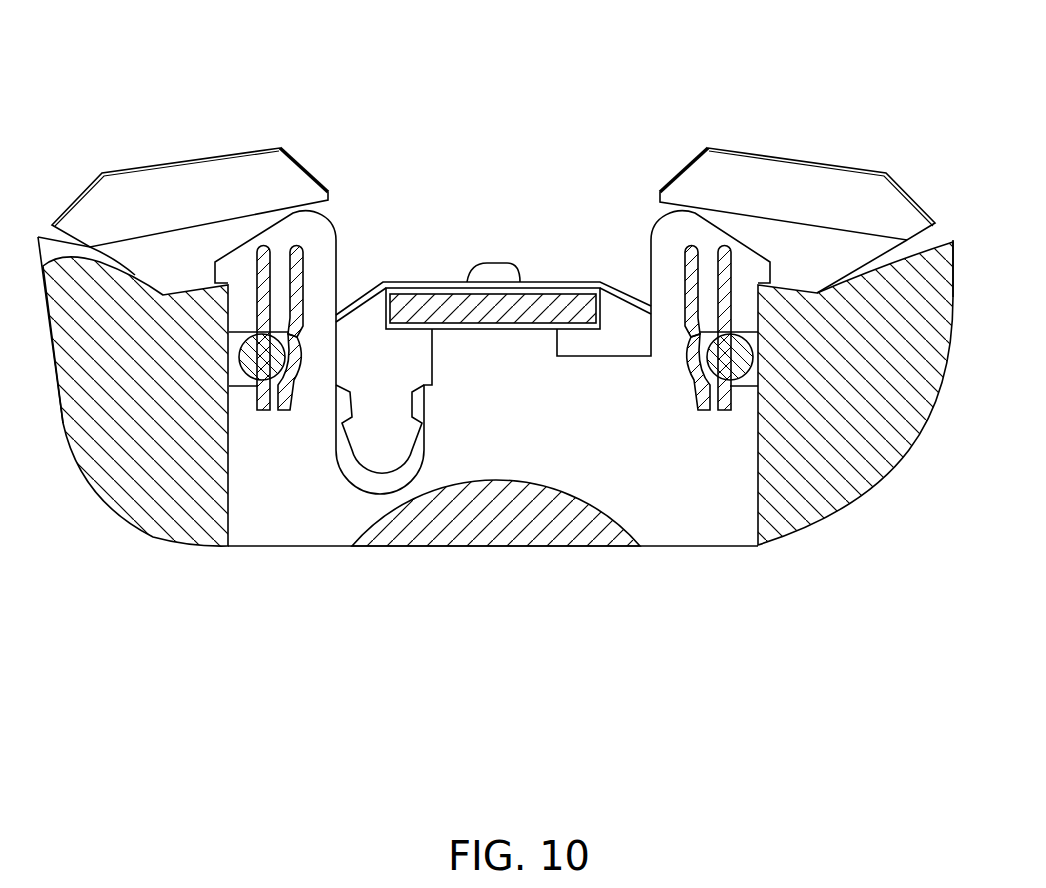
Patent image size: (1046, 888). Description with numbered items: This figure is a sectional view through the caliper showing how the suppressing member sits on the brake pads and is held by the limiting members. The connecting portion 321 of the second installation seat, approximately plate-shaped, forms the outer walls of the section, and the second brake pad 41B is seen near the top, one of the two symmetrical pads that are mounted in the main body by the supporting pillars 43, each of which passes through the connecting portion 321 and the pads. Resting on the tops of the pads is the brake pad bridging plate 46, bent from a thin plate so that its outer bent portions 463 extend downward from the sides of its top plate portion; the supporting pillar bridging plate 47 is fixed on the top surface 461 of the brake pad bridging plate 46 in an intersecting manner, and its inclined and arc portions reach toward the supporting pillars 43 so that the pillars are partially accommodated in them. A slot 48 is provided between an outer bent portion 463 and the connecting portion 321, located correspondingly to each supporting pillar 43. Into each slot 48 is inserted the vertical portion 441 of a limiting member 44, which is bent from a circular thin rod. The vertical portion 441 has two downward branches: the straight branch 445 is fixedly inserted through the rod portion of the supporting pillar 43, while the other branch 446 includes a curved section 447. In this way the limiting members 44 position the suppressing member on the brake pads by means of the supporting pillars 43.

The connecting portion 321 is at (123, 458).
The second brake pad 41B is at (737, 150).
The supporting pillar 43 is at (250, 358).
The limiting member 44 is at (727, 243).
The vertical portion 441 is at (264, 318).
The branch 445 is at (263, 245).
The branch 446 is at (297, 245).
The curved section 447 is at (303, 335).
The brake pad bridging plate 46 is at (570, 331).
The top surface 461 is at (533, 289).
The outer bent portion 463 is at (583, 307).
The supporting pillar bridging plate 47 is at (554, 281).
The slot 48 is at (311, 311).